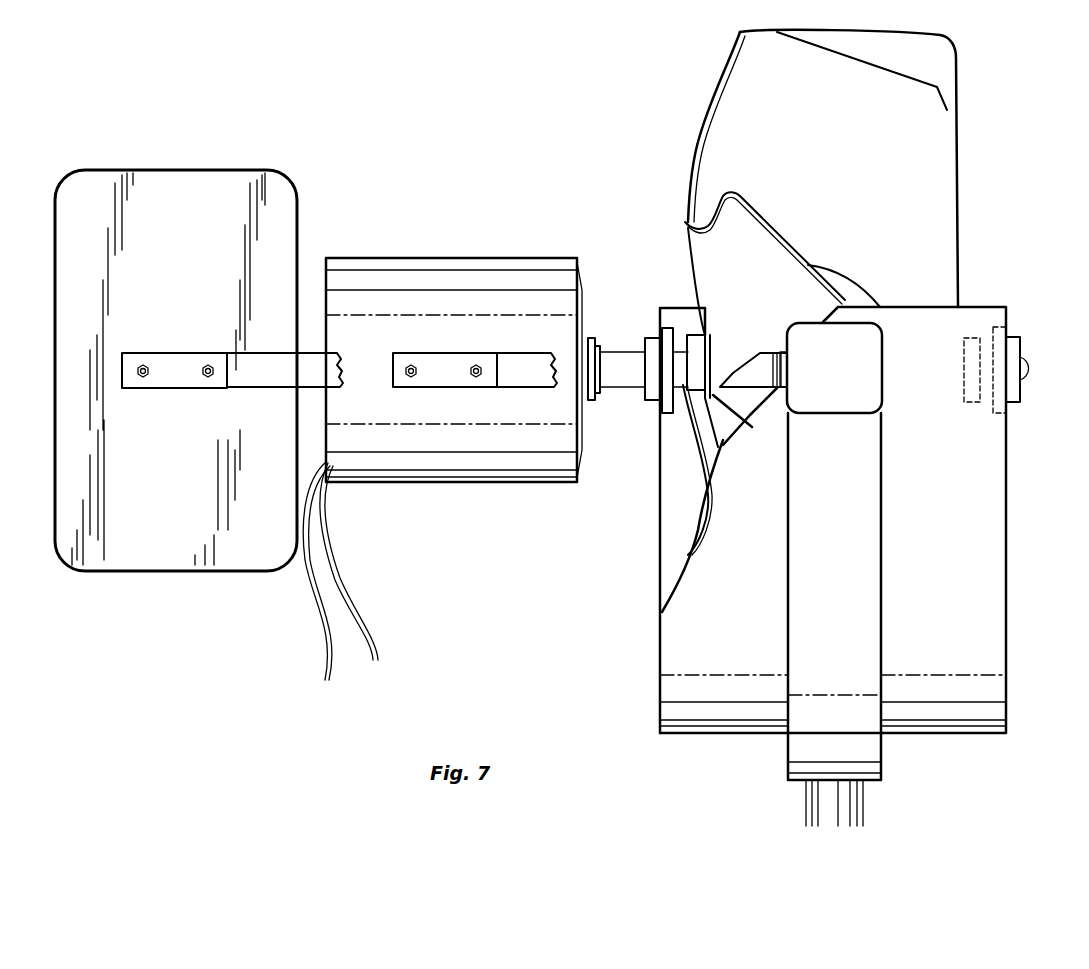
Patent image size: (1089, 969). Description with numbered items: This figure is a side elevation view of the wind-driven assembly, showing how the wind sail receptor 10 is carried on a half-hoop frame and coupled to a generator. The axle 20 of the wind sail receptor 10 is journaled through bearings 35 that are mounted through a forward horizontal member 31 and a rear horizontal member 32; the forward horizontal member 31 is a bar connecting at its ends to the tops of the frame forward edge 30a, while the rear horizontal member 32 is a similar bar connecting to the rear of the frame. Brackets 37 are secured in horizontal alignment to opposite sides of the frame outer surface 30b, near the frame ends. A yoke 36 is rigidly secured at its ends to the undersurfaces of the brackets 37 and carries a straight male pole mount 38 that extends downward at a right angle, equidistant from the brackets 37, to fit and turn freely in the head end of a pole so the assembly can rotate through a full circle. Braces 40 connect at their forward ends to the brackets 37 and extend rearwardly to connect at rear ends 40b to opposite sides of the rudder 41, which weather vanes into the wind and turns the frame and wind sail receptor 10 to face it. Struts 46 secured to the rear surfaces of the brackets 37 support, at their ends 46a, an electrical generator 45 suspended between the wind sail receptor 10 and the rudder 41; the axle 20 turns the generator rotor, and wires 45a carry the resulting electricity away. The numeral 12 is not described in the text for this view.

The wind sail receptor 10 is at (705, 97).
The workpiece 12 is at (916, 66).
The axle 20 is at (622, 377).
The forward edge 30a is at (673, 532).
The outer surface 30b is at (940, 587).
The forward horizontal member 31 is at (667, 333).
The rear horizontal member 32 is at (1008, 318).
The bearings 35 is at (652, 335).
The yoke 36 is at (805, 675).
The brackets 37 is at (843, 382).
The straight male pole mount 38 is at (850, 808).
The braces 40 is at (262, 372).
The rear ends 40b is at (172, 385).
The rudder 41 is at (199, 294).
The electrical generator 45 is at (373, 352).
The wires 45a is at (337, 617).
The struts 46 is at (515, 380).
The ends 46a is at (437, 378).